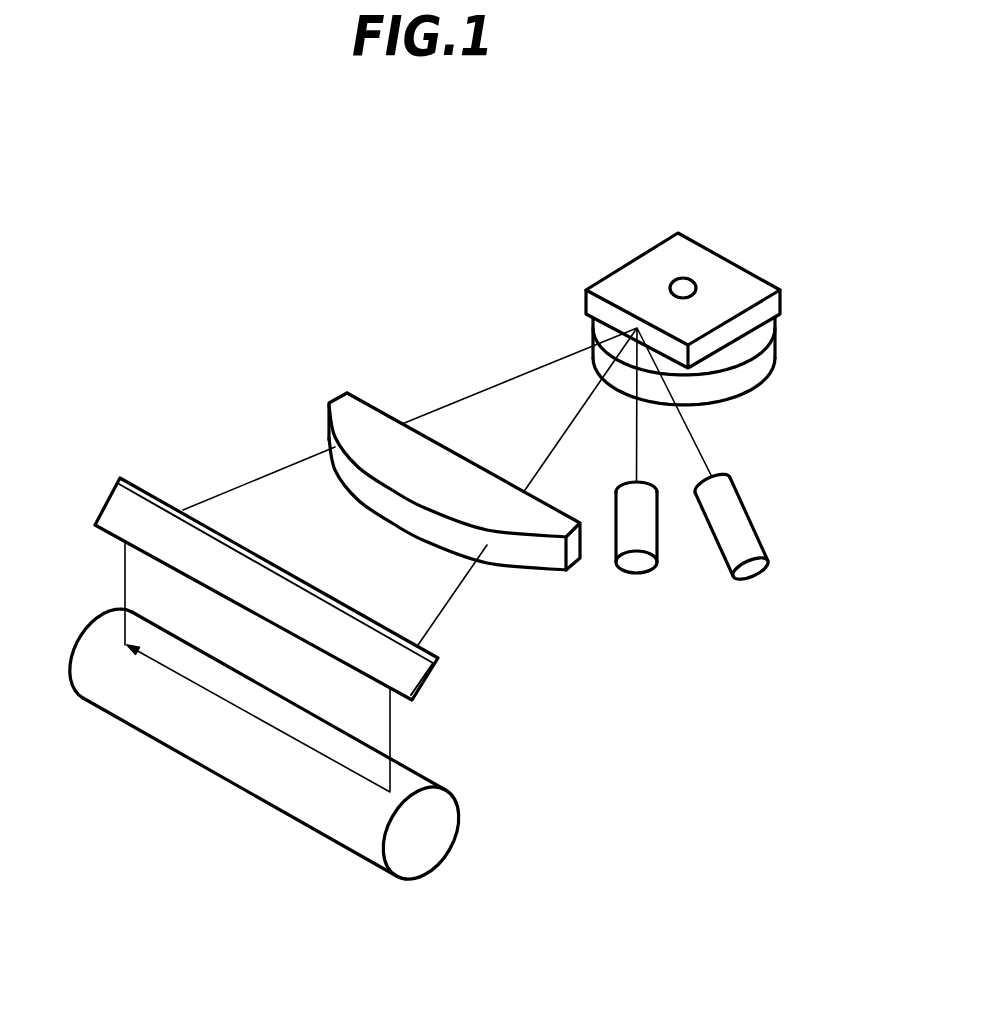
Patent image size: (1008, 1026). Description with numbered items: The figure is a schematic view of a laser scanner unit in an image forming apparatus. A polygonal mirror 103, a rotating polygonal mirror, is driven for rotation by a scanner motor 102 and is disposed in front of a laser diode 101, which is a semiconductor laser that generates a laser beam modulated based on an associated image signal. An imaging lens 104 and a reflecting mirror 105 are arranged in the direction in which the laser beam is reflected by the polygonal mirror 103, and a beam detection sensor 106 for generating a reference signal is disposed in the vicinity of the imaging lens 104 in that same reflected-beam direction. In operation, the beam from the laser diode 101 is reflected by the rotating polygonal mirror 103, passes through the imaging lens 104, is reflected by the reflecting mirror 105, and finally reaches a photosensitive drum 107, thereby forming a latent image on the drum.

The laser diode 101 is at (750, 515).
The scanner motor 102 is at (753, 368).
The polygonal mirror 103 is at (717, 252).
The imaging lens 104 is at (566, 570).
The reflecting mirror 105 is at (432, 677).
The beam detection sensor 106 is at (657, 567).
The photosensitive drum 107 is at (450, 788).